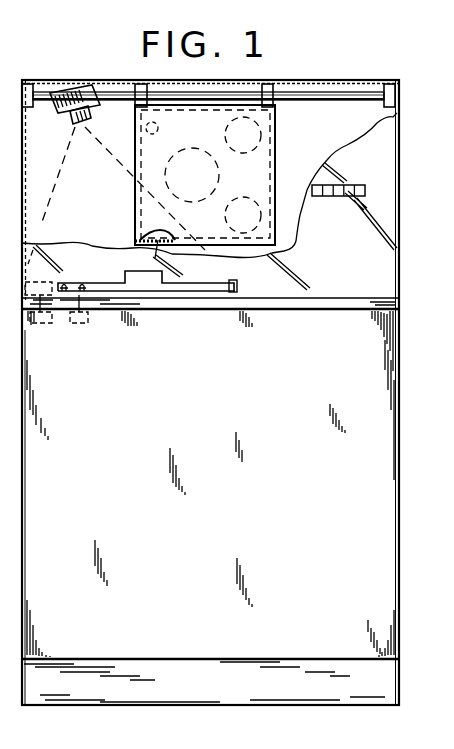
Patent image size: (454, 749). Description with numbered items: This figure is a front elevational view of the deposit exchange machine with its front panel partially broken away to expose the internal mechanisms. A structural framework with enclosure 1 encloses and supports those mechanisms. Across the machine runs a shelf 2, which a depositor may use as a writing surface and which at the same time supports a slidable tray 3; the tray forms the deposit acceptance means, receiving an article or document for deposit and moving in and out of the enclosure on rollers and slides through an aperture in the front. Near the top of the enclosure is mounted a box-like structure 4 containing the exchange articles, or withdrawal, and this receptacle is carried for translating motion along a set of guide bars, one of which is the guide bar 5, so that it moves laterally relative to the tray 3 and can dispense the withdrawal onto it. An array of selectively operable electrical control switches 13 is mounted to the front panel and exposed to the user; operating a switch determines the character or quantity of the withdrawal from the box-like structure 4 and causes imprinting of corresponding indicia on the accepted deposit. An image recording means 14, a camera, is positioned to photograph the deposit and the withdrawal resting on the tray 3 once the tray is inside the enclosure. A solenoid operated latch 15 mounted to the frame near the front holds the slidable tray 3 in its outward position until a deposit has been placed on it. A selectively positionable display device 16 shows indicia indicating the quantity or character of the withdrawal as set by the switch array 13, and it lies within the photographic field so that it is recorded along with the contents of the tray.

The structural framework with enclosure 1 is at (401, 228).
The shelf 2 is at (320, 296).
The slidable tray 3 is at (235, 285).
The box-like structure 4 is at (277, 158).
The guide bar 5 is at (333, 100).
The array of selectively operable electrical control switches 13 is at (344, 185).
The image recording means 14 is at (68, 125).
The solenoid operated latch 15 is at (82, 323).
The selectively positionable display device 16 is at (42, 323).